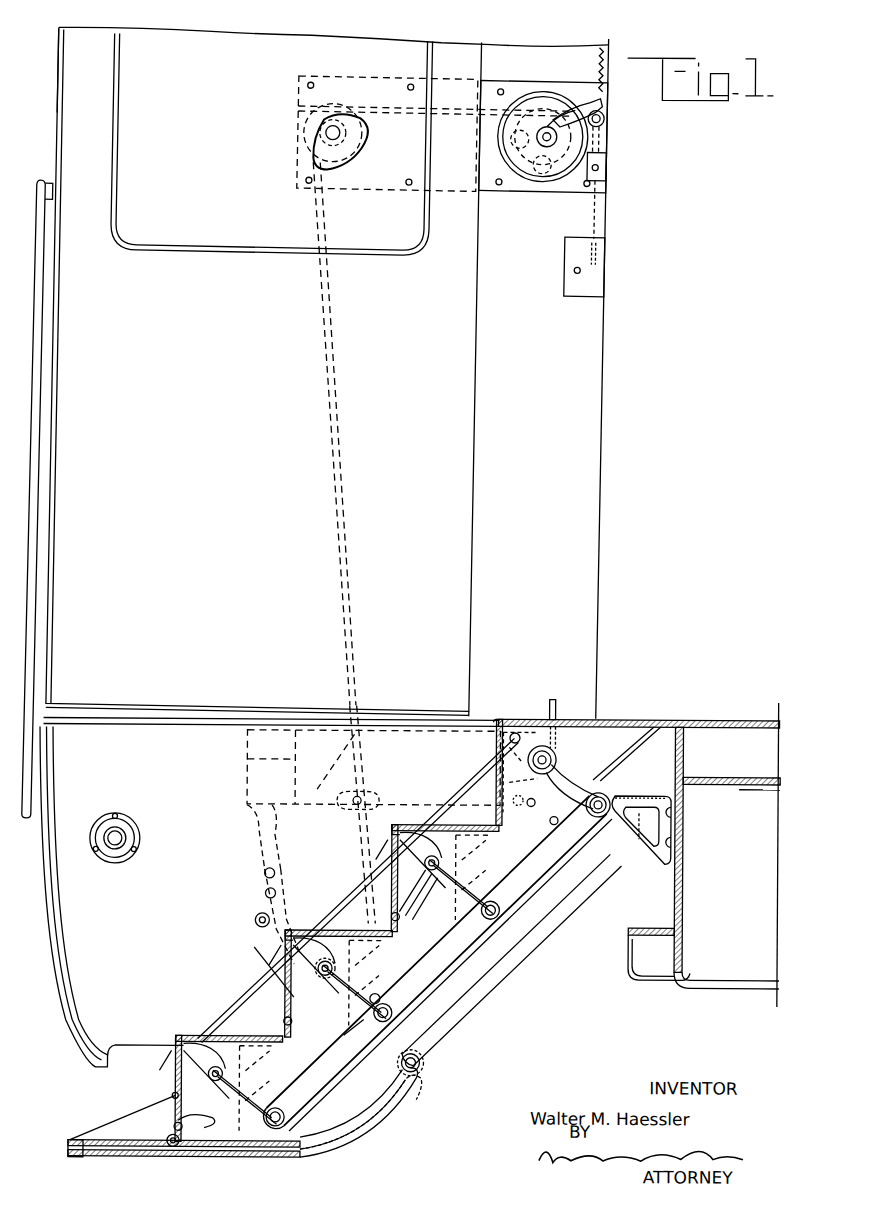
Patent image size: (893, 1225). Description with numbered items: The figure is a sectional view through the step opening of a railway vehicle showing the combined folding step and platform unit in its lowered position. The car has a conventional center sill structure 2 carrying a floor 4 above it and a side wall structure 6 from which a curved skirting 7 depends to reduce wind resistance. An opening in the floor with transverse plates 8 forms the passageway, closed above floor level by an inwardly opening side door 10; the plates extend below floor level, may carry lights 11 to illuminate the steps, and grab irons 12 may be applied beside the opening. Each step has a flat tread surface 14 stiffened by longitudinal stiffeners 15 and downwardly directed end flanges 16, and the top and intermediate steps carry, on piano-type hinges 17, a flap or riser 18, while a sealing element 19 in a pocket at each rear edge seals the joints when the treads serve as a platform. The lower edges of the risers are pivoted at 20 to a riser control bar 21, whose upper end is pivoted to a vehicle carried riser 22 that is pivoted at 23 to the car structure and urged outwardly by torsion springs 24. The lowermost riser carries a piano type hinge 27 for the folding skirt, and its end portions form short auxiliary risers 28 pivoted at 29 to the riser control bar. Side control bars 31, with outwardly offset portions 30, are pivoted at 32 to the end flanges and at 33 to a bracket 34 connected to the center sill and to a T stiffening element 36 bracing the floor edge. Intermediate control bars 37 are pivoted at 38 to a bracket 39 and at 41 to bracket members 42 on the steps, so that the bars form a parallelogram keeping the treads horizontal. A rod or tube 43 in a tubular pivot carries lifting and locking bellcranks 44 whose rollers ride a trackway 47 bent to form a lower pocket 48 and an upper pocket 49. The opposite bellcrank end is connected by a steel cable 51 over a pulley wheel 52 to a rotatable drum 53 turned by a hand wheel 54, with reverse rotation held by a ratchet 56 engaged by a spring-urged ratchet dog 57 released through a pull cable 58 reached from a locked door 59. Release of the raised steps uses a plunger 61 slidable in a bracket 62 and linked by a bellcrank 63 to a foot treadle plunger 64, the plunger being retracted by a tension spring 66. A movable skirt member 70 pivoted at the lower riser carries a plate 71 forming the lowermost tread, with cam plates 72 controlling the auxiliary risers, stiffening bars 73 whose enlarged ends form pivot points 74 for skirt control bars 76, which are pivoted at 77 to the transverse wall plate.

The center sill structure 2 is at (686, 884).
The floor 4 is at (721, 719).
The side wall structure 6 is at (46, 146).
The curved skirting 7 is at (56, 985).
The transverse plates 8 is at (270, 820).
The side door 10 is at (327, 373).
The lights 11 is at (131, 830).
The grab irons 12 is at (36, 439).
The tread surface 14 is at (325, 973).
The stiffeners 15 is at (335, 978).
The end flanges 16 is at (266, 952).
The hinge 17 is at (402, 822).
The flap or riser 18 is at (391, 843).
The sealing element 19 is at (573, 852).
The pivot 20 is at (260, 1025).
The riser control bar 21 is at (428, 912).
The vehicle carried riser 22 is at (497, 790).
The pivot 23 is at (501, 719).
The torsion springs 24 is at (509, 739).
The piano type hinge 27 is at (176, 1148).
The auxiliary risers 28 is at (174, 1097).
The pivot 29 is at (200, 1121).
The offset portions 30 is at (415, 893).
The side control bars 31 is at (375, 871).
The pivots 32 is at (215, 1068).
The pivot 33 is at (557, 759).
The bracket 34 is at (571, 786).
The stiffening element 36 is at (587, 749).
The intermediate control bars 37 is at (436, 988).
The pivot 38 is at (605, 798).
The bracket 39 is at (643, 796).
The pivot 41 is at (500, 916).
The bracket members 42 is at (369, 983).
The rod or tube 43 is at (272, 999).
The lifting and locking bellcranks 44 is at (347, 968).
The trackway 47 is at (251, 856).
The lower pocket 48 is at (374, 1032).
The upper pocket 49 is at (261, 809).
The steel cable 51 is at (456, 112).
The pulley wheel 52 is at (340, 142).
The rotatable drum 53 is at (536, 122).
The hand wheel 54 is at (528, 178).
The ratchet 56 is at (596, 126).
The ratchet dog 57 is at (553, 106).
The pull cable 58 is at (586, 214).
The door 59 is at (578, 290).
The plunger 61 is at (372, 799).
The bracket 62 is at (266, 763).
The bellcrank 63 is at (504, 777).
The foot treadle plunger 64 is at (559, 705).
The tension spring 66 is at (640, 843).
The movable skirt member 70 is at (345, 1146).
The plate 71 is at (111, 1147).
The cam plates 72 is at (139, 1114).
The bars 73 is at (334, 1130).
The pivot points 74 is at (423, 1063).
The skirt control bars 76 is at (395, 1043).
The pivot 77 is at (256, 922).